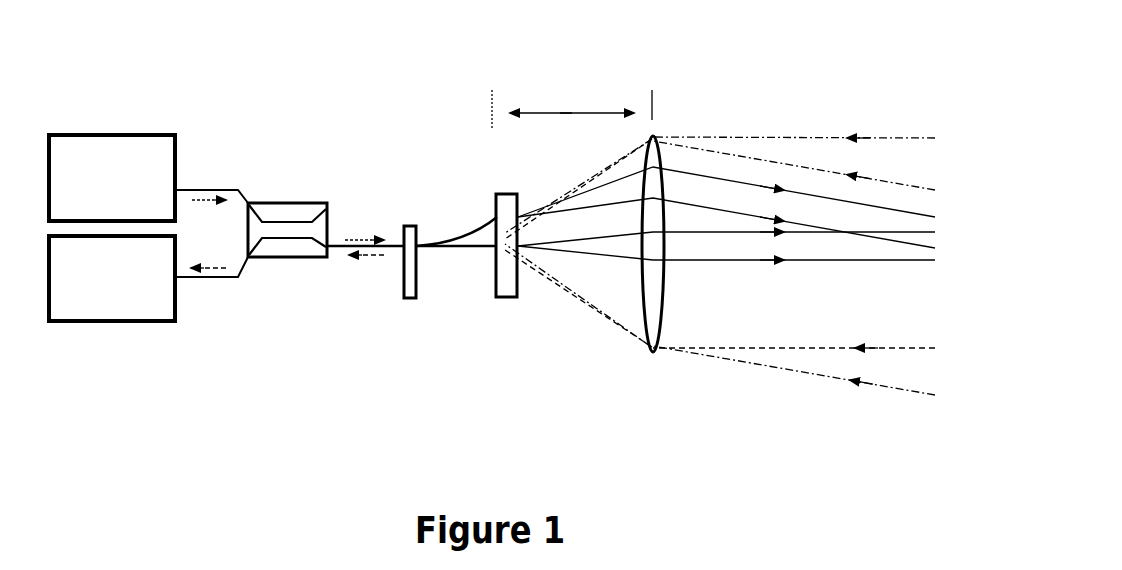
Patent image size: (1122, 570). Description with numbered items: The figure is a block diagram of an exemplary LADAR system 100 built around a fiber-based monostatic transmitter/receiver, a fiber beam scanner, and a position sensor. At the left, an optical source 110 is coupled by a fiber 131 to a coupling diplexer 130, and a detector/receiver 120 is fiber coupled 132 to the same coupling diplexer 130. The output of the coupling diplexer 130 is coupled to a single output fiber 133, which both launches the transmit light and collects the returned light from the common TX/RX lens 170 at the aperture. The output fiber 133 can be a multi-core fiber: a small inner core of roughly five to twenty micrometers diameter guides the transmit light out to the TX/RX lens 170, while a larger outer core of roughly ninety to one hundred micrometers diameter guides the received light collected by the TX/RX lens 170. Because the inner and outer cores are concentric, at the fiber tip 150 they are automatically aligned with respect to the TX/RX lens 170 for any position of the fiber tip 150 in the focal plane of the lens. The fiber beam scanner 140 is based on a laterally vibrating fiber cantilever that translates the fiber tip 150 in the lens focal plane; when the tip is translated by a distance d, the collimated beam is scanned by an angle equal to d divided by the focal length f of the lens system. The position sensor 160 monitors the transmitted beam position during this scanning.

The LADAR system 100 is at (412, 52).
The optical source 110 is at (124, 132).
The detector/receiver 120 is at (130, 323).
The coupling diplexer 130 is at (283, 202).
The fiber 131 is at (212, 185).
The fiber 132 is at (212, 279).
The output fiber 133 is at (365, 236).
The fiber beam scanner 140 is at (403, 297).
The fiber tip 150 is at (460, 212).
The position sensor 160 is at (495, 298).
The TX/RX lens 170 is at (662, 338).